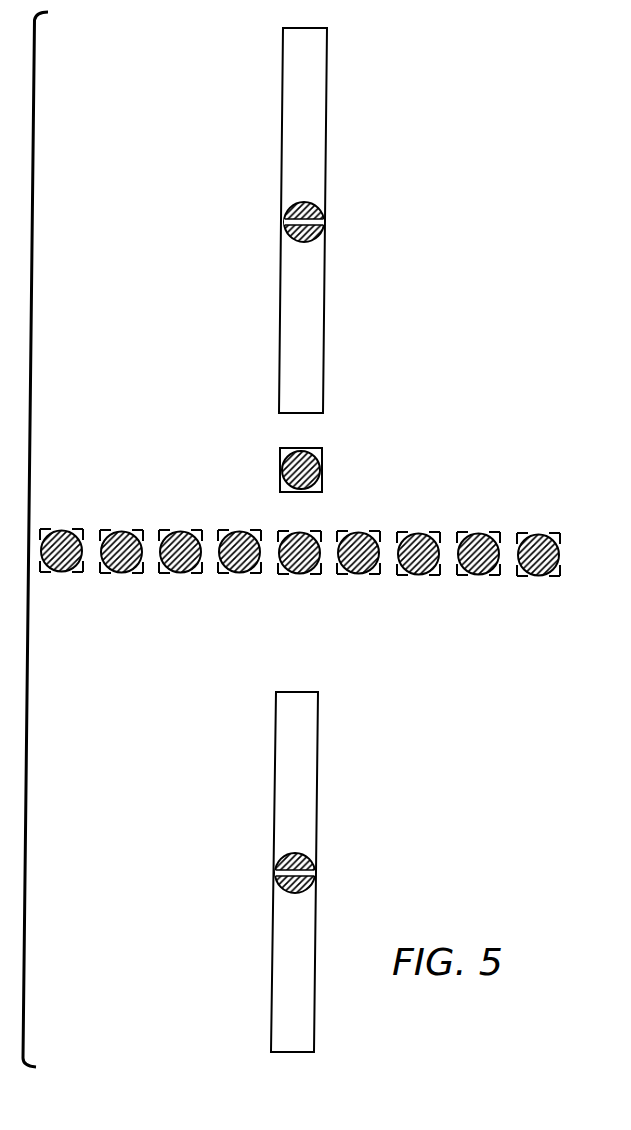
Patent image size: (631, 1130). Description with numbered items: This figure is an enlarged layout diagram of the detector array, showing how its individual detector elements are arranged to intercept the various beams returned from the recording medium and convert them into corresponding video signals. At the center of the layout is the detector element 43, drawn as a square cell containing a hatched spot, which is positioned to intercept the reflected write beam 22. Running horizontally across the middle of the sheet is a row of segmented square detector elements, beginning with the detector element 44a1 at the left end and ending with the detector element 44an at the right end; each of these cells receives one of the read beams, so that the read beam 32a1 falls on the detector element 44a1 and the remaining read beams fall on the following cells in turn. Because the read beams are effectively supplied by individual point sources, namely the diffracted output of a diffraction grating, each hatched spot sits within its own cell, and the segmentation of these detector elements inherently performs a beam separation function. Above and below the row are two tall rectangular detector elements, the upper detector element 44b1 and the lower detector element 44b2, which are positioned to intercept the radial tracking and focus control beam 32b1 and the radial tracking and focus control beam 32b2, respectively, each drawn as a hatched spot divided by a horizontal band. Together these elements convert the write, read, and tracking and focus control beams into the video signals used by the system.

The write beam 22 is at (297, 460).
The detector element 43 is at (322, 470).
The radial tracking and focus control beam 32b1 is at (292, 205).
The detector element 44b1 is at (296, 220).
The radial tracking and focus control beam 32b2 is at (285, 857).
The detector element 44b2 is at (293, 872).
The read beam 32a1 is at (59, 534).
The detector element 44a1 is at (67, 552).
The detector element 44an is at (526, 532).